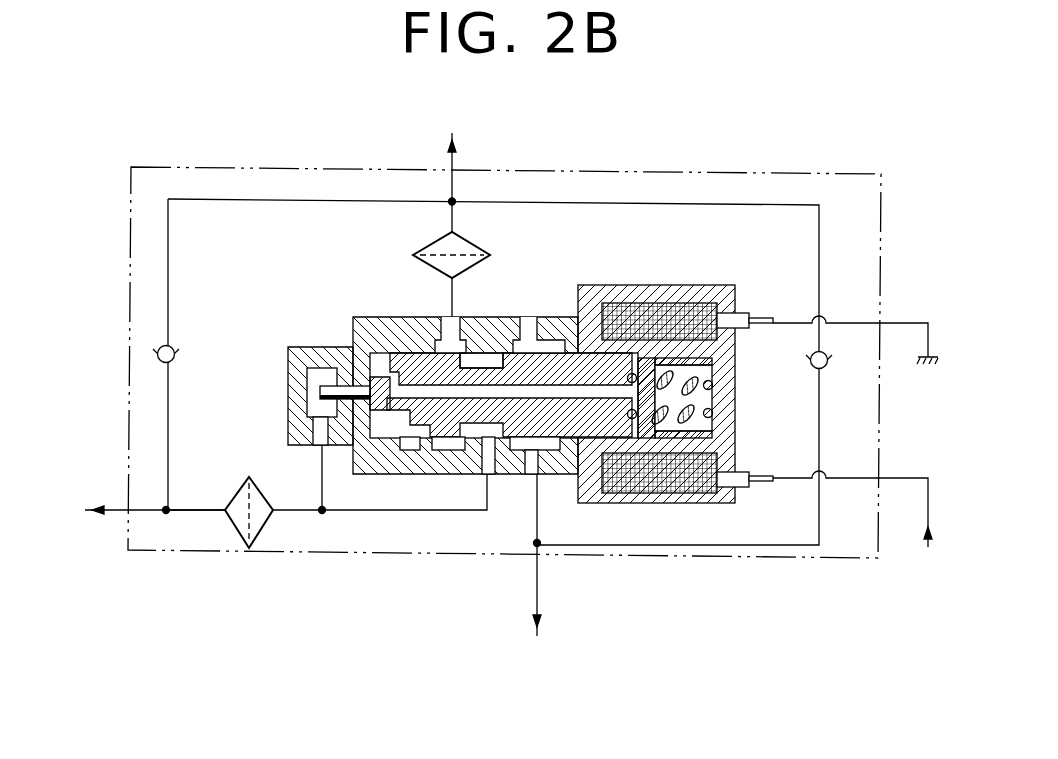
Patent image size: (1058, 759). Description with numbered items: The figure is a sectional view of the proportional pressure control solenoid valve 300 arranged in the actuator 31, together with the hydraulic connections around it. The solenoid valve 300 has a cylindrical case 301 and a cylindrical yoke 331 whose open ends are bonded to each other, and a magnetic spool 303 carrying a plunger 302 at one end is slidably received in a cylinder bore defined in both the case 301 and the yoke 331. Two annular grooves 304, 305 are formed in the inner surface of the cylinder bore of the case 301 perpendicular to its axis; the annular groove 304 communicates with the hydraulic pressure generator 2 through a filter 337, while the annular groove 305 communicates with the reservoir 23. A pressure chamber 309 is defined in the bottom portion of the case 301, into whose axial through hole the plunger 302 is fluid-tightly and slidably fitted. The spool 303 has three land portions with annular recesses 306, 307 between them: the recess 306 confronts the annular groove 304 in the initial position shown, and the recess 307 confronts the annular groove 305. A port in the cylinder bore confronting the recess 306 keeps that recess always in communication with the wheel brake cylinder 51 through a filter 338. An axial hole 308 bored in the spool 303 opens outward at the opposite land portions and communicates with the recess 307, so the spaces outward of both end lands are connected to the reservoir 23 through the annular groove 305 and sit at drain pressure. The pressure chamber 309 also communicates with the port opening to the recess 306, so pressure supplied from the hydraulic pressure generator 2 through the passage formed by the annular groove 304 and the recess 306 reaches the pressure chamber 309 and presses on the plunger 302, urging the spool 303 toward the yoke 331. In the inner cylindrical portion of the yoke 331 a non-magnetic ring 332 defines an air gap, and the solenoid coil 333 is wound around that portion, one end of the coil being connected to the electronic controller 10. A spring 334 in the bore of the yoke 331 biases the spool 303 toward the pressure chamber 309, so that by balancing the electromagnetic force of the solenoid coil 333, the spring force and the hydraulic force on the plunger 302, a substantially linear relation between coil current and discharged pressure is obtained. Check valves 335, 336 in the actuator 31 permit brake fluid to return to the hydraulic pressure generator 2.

The hydraulic pressure generator 2 is at (452, 209).
The electronic controller 10 is at (857, 527).
The reservoir 23 is at (536, 573).
The actuator 31 is at (790, 170).
The wheel brake cylinder 51 is at (138, 510).
The solenoid valve 300 is at (512, 380).
The cylindrical case 301 is at (353, 330).
The plunger 302 is at (300, 405).
The magnetic spool 303 is at (418, 437).
The annular groove 304 is at (450, 455).
The annular groove 305 is at (518, 447).
The annular recess 306 is at (485, 368).
The annular recess 307 is at (541, 315).
The hole 308 is at (393, 370).
The pressure chamber 309 is at (318, 373).
The cylindrical yoke 331 is at (720, 500).
The non-magnetic ring 332 is at (650, 465).
The solenoid coil 333 is at (667, 495).
The spring 334 is at (733, 412).
The check valve 335 is at (175, 358).
The check valve 336 is at (812, 366).
The filter 337 is at (432, 235).
The filter 338 is at (233, 527).